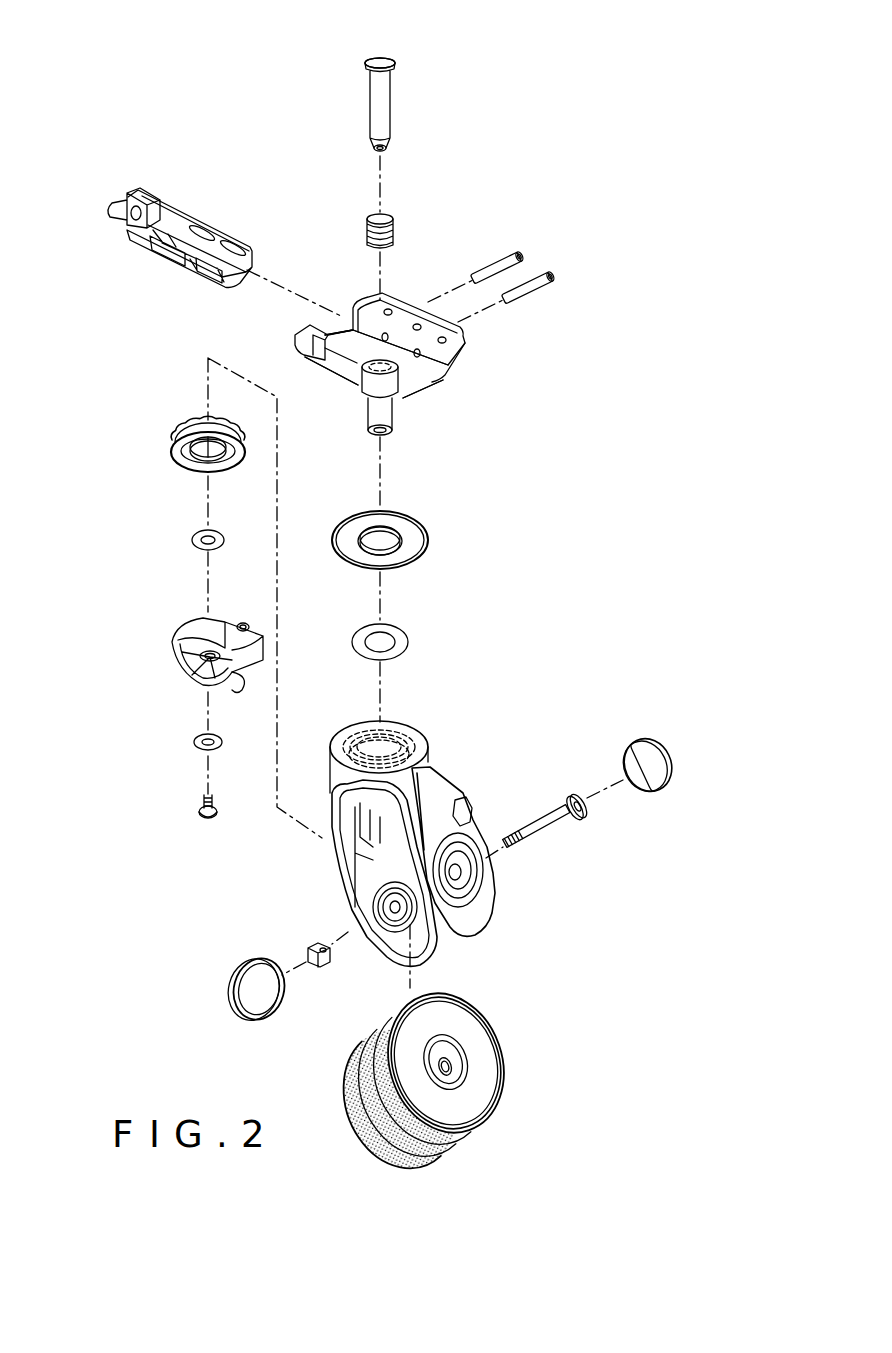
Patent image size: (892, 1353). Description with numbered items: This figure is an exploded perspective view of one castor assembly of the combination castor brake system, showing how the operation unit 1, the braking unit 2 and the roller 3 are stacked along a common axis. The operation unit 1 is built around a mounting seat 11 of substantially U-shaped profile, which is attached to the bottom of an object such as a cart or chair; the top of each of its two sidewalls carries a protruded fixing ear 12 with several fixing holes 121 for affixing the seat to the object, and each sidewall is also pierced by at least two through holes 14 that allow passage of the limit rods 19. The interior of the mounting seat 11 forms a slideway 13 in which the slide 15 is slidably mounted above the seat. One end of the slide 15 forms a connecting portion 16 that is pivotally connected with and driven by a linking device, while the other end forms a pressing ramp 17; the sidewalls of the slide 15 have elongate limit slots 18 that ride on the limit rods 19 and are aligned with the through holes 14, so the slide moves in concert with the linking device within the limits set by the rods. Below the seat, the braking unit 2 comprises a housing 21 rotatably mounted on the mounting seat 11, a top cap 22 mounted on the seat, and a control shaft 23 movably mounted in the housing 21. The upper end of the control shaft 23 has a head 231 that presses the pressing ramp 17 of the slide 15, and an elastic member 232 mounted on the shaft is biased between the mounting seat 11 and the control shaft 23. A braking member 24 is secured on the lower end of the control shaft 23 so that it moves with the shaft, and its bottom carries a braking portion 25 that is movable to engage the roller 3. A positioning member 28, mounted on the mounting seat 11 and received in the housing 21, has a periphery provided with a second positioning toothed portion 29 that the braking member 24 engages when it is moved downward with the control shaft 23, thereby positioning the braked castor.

The operation unit 1 is at (598, 300).
The braking unit 2 is at (533, 622).
The roller 3 is at (480, 1060).
The mounting seat 11 is at (420, 382).
The fixing ear 12 is at (465, 340).
The fixing holes 121 is at (447, 346).
The slideway 13 is at (344, 320).
The through holes 14 is at (438, 380).
The slide 15 is at (176, 212).
The connecting portion 16 is at (120, 198).
The pressing ramp 17 is at (178, 263).
The limit slots 18 is at (232, 247).
The limit rods 19 is at (525, 255).
The housing 21 is at (432, 760).
The top cap 22 is at (418, 540).
The control shaft 23 is at (386, 118).
The head 231 is at (395, 66).
The elastic member 232 is at (395, 225).
The braking member 24 is at (178, 635).
The braking portion 25 is at (240, 683).
The positioning member 28 is at (174, 456).
The second positioning toothed portion 29 is at (182, 428).